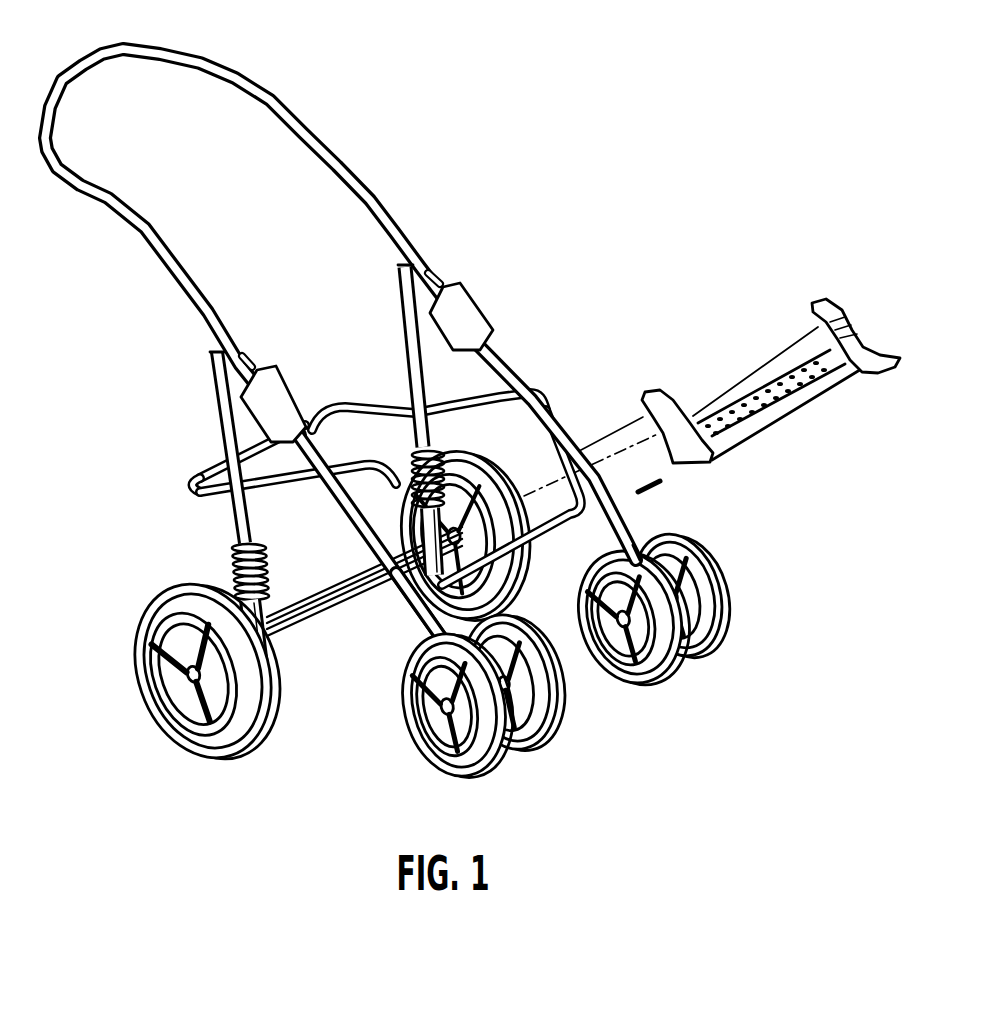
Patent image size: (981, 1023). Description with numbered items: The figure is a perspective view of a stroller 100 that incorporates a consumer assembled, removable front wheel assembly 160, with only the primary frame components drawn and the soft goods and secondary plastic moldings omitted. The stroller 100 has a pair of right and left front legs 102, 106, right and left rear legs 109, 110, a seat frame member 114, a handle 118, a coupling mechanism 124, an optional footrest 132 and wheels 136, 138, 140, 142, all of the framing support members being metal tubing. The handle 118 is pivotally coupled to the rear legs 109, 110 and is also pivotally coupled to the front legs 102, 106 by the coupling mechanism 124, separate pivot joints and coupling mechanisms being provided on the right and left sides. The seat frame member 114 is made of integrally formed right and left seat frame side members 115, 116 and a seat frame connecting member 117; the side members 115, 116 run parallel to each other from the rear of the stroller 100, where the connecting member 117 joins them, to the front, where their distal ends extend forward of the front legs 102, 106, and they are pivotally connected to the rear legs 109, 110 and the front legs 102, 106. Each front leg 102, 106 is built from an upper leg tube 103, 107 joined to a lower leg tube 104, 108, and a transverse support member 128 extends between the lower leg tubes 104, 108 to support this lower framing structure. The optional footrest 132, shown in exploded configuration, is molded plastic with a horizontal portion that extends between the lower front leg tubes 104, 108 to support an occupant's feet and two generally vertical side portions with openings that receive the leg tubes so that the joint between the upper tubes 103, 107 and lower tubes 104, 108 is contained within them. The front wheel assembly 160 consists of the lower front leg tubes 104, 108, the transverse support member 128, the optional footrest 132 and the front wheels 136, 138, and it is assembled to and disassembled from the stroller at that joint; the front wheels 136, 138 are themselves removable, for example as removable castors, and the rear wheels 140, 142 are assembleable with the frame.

The stroller 100 is at (503, 77).
The right front leg 102 is at (370, 598).
The right upper leg tube 103 is at (358, 546).
The right lower leg tube 104 is at (420, 613).
The left front leg 106 is at (526, 352).
The left upper leg tube 107 is at (562, 420).
The left lower leg tube 108 is at (643, 513).
The right rear leg 109 is at (233, 512).
The left rear leg 110 is at (397, 283).
The seat frame member 114 is at (320, 380).
The right seat frame side member 115 is at (303, 490).
The left seat frame side member 116 is at (380, 410).
The seat frame connecting member 117 is at (203, 457).
The handle 118 is at (268, 86).
The coupling mechanism 124 is at (283, 357).
The transverse support member 128 is at (550, 547).
The footrest 132 is at (797, 413).
The front wheel 136 is at (447, 760).
The front wheel 138 is at (723, 597).
The rear wheel 140 is at (150, 593).
The rear wheel 142 is at (480, 480).
The front wheel assembly 160 is at (650, 492).